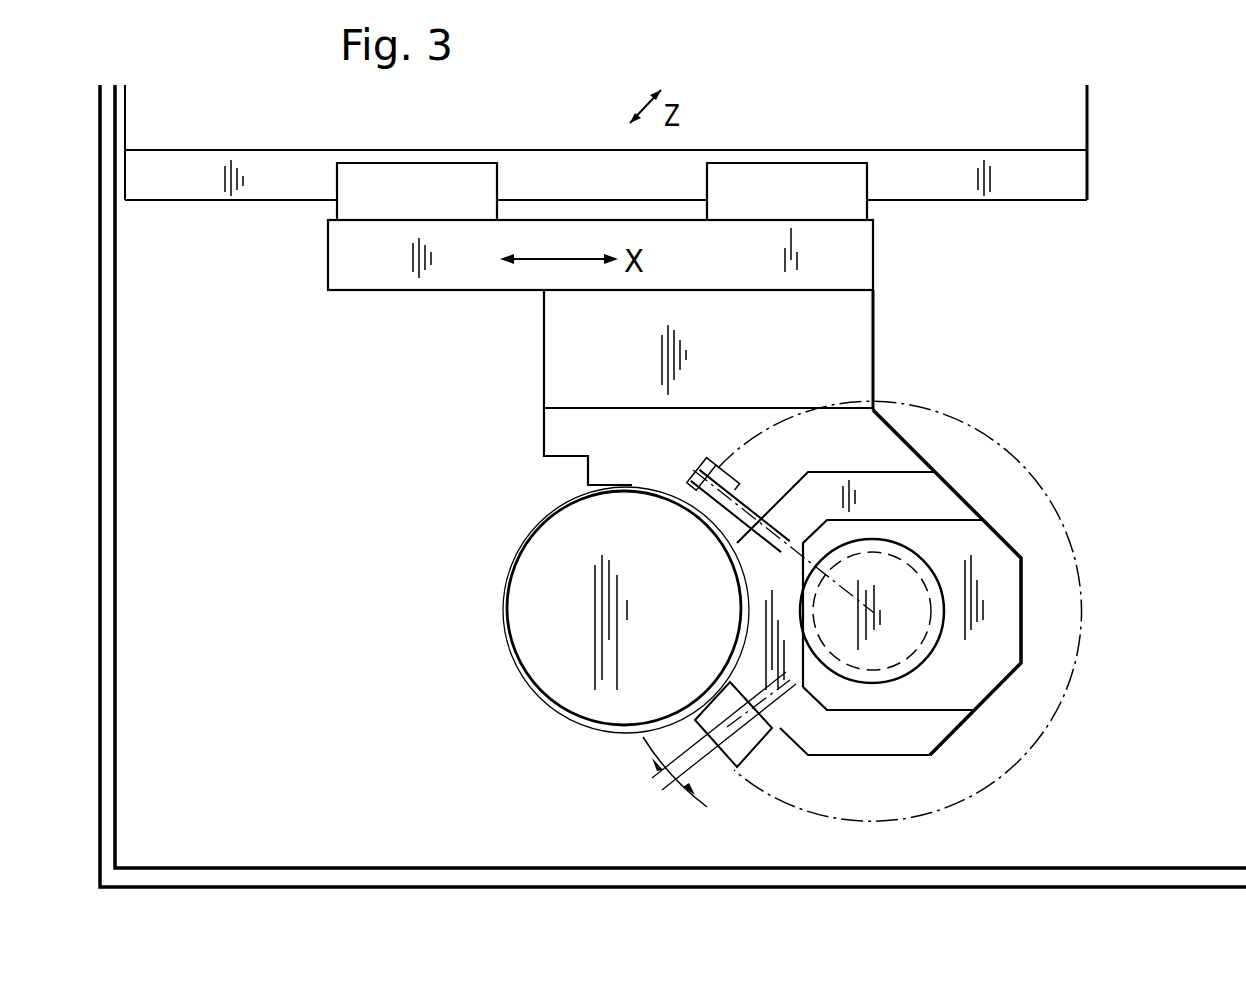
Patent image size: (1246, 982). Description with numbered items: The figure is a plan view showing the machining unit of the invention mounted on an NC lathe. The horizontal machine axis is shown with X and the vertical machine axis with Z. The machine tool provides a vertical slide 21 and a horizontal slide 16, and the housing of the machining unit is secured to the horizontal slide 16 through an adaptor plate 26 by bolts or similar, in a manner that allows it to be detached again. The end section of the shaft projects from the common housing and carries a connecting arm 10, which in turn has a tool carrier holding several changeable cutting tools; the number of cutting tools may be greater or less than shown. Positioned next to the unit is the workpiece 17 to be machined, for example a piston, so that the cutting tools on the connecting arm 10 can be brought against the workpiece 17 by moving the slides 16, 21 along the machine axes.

The connecting arm 10 is at (862, 660).
The horizontal slide 16 is at (848, 252).
The workpiece 17 is at (566, 688).
The vertical slide 21 is at (878, 129).
The adaptor plate 26 is at (845, 344).